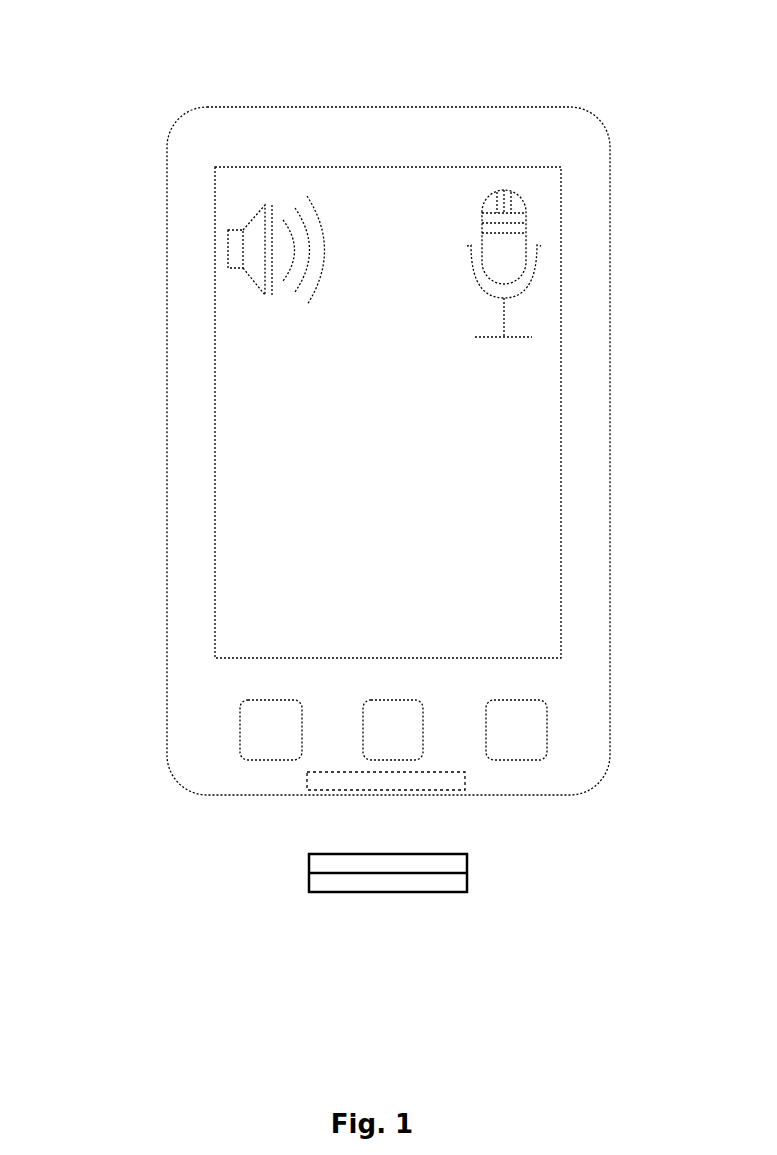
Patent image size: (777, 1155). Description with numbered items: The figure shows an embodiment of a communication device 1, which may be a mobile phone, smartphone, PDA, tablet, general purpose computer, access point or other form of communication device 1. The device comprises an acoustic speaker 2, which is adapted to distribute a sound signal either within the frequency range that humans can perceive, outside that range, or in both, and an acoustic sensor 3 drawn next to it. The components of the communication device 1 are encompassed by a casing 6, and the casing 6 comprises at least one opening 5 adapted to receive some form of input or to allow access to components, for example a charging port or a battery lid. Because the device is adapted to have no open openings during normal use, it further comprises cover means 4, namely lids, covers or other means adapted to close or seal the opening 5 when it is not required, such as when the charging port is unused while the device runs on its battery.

The communication device 1 is at (188, 82).
The acoustic speaker 2 is at (225, 247).
The acoustic sensor 3 is at (535, 222).
The cover means 4 is at (355, 892).
The opening 5 is at (435, 790).
The casing 6 is at (167, 598).